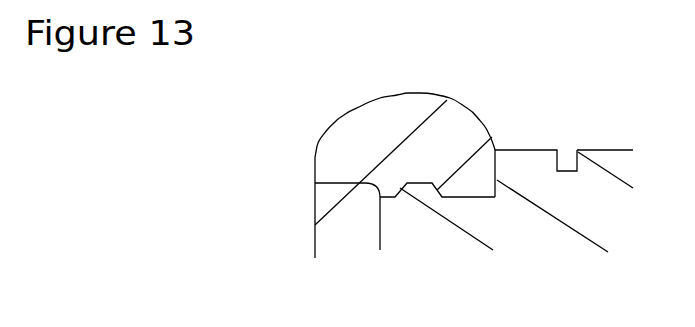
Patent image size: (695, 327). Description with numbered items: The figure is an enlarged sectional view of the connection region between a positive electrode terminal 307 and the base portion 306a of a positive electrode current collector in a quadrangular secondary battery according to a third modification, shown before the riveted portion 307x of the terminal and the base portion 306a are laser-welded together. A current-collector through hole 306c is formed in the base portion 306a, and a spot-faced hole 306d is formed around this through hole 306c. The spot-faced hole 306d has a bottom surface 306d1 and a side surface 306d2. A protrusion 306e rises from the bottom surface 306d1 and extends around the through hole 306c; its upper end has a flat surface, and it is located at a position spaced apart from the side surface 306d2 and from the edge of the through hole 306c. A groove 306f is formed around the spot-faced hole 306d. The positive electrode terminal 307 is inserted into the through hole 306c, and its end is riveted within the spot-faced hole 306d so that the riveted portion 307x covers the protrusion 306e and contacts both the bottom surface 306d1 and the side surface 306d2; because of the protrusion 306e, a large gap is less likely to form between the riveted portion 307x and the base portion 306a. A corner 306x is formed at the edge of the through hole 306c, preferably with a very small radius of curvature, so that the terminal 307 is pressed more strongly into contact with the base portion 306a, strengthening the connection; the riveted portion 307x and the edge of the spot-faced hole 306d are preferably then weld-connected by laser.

The positive electrode terminal 307 is at (330, 133).
The riveted portion 307x is at (407, 126).
The corner 306x is at (315, 180).
The current-collector through hole 306c is at (380, 238).
The protrusion 306e is at (420, 188).
The spot-faced hole 306d is at (473, 183).
The bottom surface 306d1 is at (472, 198).
The side surface 306d2 is at (497, 175).
The groove 306f is at (570, 168).
The base portion 306a is at (612, 145).